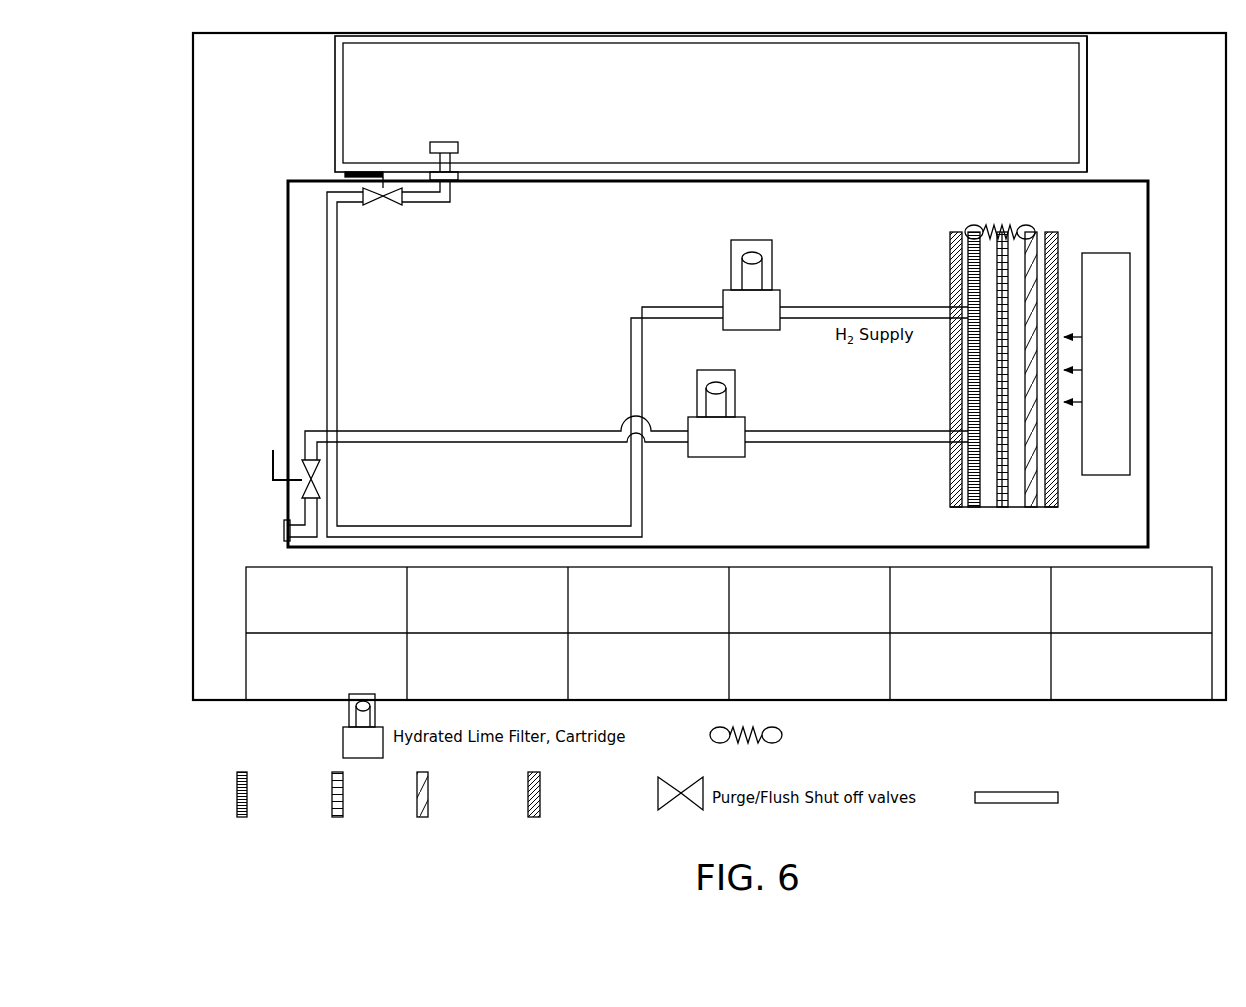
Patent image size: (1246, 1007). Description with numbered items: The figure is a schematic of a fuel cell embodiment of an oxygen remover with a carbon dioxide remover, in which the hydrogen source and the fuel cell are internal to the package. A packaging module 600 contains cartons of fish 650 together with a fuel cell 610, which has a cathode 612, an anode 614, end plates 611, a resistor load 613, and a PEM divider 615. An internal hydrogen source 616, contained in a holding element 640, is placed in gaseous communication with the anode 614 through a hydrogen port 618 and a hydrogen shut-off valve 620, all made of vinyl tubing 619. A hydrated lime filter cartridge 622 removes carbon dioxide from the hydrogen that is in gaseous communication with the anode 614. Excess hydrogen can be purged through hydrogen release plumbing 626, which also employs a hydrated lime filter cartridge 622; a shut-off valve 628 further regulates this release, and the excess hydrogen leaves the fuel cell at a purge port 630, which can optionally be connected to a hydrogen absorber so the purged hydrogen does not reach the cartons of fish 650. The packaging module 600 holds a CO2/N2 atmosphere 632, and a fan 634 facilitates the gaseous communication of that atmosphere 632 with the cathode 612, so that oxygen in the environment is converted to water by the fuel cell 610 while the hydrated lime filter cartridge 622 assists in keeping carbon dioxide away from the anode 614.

The packaging module 600 is at (185, 396).
The fuel cell 610 is at (663, 530).
The end plates 611 is at (534, 817).
The cathode 612 is at (1037, 228).
The resistor load 613 is at (757, 743).
The anode 614 is at (972, 222).
The PEM divider 615 is at (337, 817).
The internal hydrogen source 616 is at (335, 88).
The hydrogen port 618 is at (530, 197).
The vinyl tubing 619 is at (1045, 805).
The hydrogen shut-off valve 620 is at (397, 246).
The hydrated lime filter cartridge 622 is at (752, 240).
The hydrogen release plumbing 626 is at (862, 458).
The shut-off valve 628 is at (262, 441).
The purge port 630 is at (227, 535).
The CO2/N2 atmosphere 632 is at (262, 142).
The fan 634 is at (1130, 388).
The holding element 640 is at (1083, 95).
The cartons of fish 650 is at (708, 669).